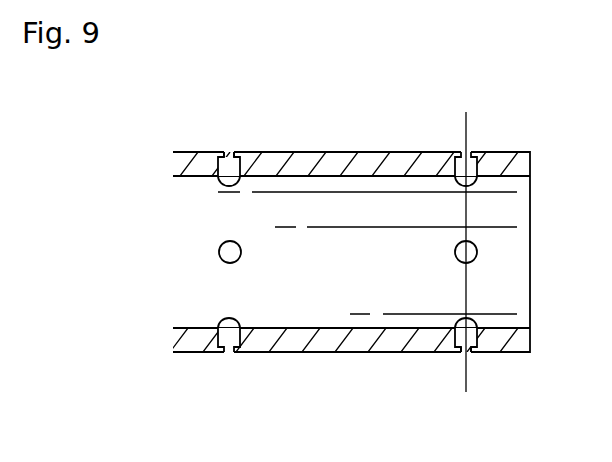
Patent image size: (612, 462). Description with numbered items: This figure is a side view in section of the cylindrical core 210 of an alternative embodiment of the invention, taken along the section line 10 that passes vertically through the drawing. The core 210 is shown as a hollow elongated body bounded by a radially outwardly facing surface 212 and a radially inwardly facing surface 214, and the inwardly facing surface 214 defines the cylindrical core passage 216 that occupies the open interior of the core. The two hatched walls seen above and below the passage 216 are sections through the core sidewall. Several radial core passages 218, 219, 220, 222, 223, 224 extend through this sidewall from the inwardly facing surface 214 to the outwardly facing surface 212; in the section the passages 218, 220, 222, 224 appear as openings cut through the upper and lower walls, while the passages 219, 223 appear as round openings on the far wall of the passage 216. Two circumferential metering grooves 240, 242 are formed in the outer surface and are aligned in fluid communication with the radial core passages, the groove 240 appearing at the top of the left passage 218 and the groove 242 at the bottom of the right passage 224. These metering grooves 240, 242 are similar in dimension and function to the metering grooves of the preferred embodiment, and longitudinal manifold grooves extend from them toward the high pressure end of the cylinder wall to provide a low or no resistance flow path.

The section line 10 is at (429, 112).
The cylindrical core 210 is at (152, 156).
The radially outwardly facing surface 212 is at (278, 353).
The radially inwardly facing surface 214 is at (197, 177).
The cylindrical core passage 216 is at (372, 284).
The radial core passage 218 is at (238, 168).
The radial core passage 219 is at (232, 252).
The radial core passage 220 is at (229, 348).
The radial core passage 222 is at (472, 153).
The radial core passage 223 is at (470, 252).
The radial core passage 224 is at (472, 352).
The circumferential metering groove 240 is at (231, 152).
The circumferential metering groove 242 is at (462, 353).